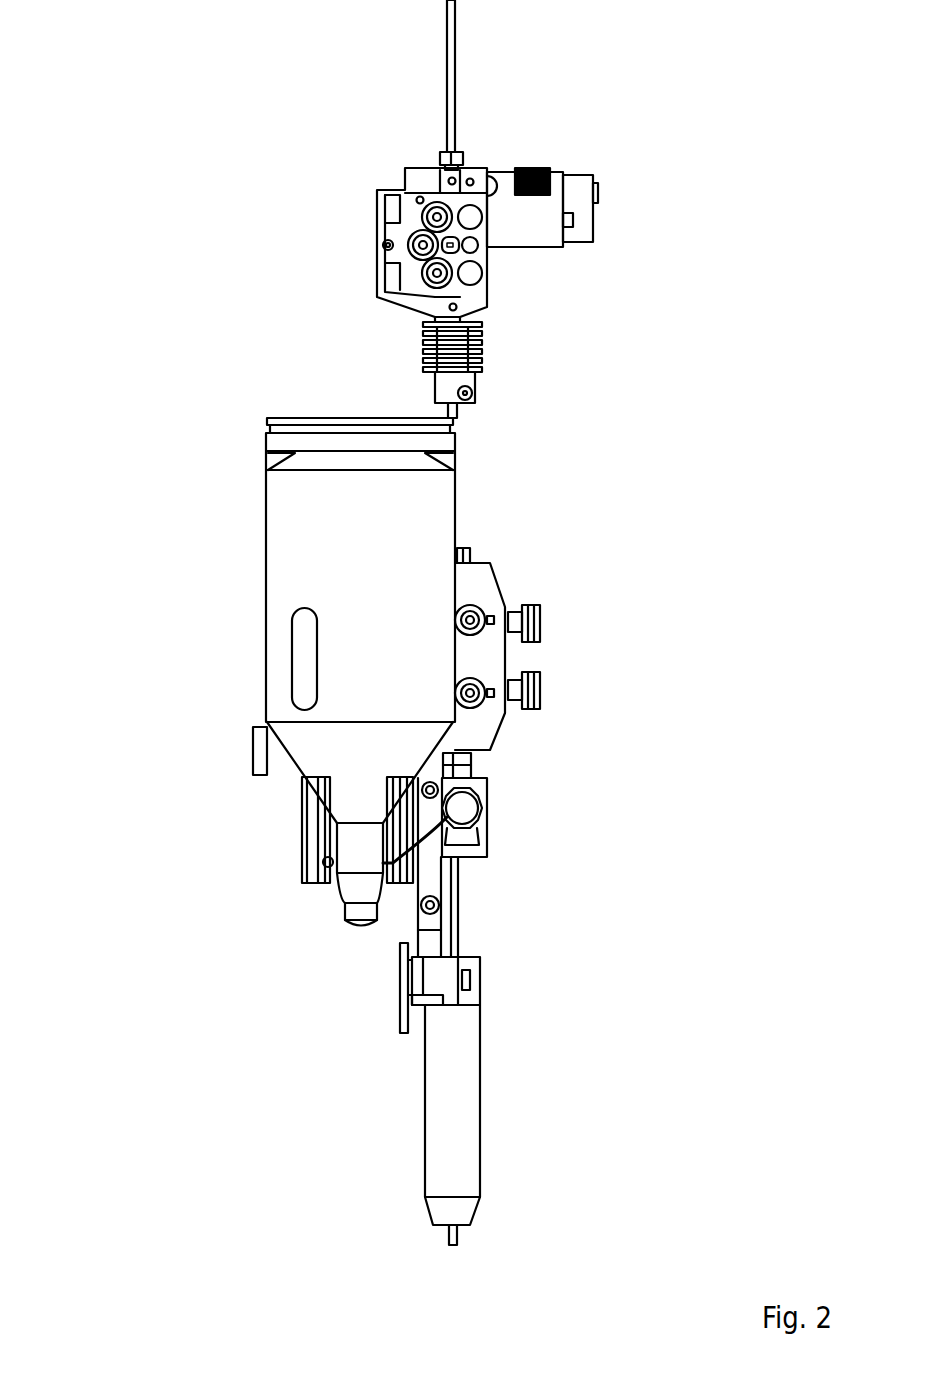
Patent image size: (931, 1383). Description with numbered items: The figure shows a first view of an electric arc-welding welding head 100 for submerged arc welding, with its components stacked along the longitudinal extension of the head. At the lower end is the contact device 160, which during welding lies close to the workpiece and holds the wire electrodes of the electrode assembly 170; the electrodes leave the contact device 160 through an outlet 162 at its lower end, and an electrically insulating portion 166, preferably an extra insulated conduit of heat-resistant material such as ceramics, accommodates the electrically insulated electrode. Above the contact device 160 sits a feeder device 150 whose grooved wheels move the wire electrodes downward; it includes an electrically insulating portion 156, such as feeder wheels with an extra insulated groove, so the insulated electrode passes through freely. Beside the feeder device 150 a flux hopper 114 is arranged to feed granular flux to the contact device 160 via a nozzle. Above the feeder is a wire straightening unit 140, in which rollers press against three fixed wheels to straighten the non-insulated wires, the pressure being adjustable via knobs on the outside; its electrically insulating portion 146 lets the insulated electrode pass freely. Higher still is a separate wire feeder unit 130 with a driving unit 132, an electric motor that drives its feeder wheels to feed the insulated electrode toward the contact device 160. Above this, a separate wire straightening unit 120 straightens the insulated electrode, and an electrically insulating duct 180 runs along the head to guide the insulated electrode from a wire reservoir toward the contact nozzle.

The electric arc-welding welding head 100 is at (226, 238).
The flux hopper 114 is at (265, 588).
The wire straightening unit 120 is at (468, 156).
The wire feeder unit 130 is at (374, 236).
The driving unit 132 is at (580, 175).
The wire straightening unit 140 is at (570, 627).
The electrically insulating portion 146 is at (545, 572).
The feeder device 150 is at (546, 867).
The electrically insulating portion 156 is at (500, 800).
The contact device 160 is at (493, 1115).
The outlet 162 is at (437, 1212).
The electrically insulating portion 166 is at (490, 1100).
The electrode assembly 170 is at (466, 1237).
The electrically insulating duct 180 is at (447, 75).